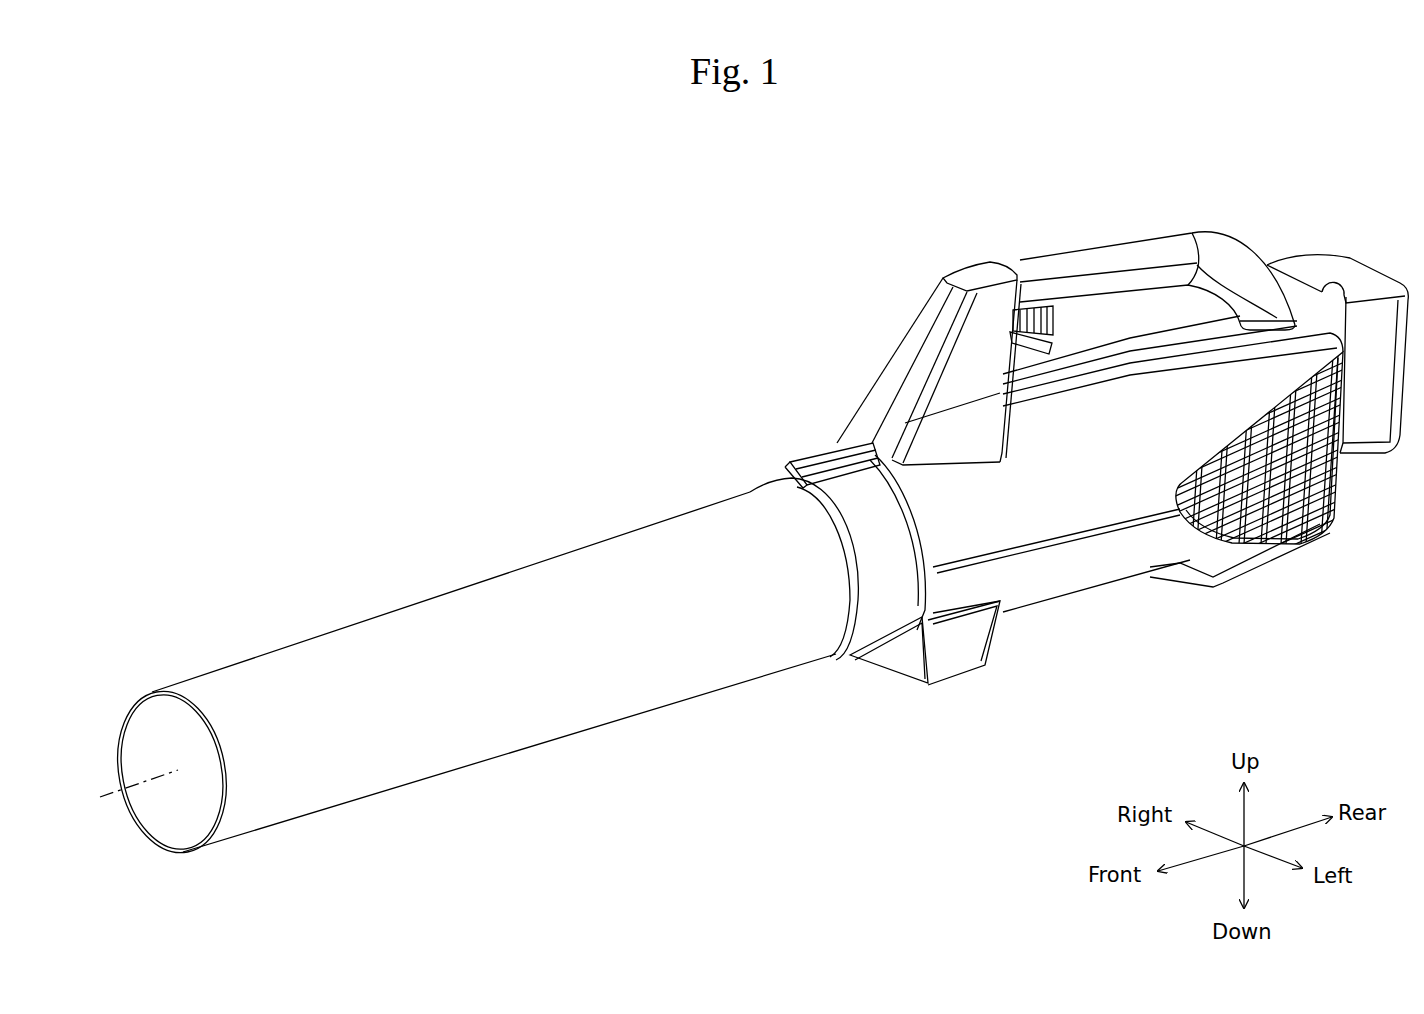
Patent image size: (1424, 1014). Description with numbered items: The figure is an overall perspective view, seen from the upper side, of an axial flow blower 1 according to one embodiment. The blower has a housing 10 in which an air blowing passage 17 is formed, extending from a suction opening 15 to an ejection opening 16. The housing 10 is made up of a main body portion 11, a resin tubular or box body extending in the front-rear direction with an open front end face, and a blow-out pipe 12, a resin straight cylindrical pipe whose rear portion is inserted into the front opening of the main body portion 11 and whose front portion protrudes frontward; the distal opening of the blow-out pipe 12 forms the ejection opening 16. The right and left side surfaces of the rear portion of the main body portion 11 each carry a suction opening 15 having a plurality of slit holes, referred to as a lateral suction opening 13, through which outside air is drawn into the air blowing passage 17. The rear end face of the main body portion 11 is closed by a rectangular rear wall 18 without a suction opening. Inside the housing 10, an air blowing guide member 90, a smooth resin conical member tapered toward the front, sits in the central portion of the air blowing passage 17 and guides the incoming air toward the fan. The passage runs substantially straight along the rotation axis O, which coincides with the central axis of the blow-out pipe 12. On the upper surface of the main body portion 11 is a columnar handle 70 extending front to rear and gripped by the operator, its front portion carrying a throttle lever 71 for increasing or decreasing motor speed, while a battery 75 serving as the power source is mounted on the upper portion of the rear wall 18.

The axial flow blower 1 is at (757, 357).
The housing 10 is at (1080, 598).
The main body portion 11 is at (1046, 473).
The blow-out pipe 12 is at (512, 585).
The lateral suction opening 13 is at (1277, 483).
The suction opening 15 is at (1248, 527).
The ejection opening 16 is at (223, 795).
The air blowing passage 17 is at (173, 742).
The rear wall 18 is at (1348, 490).
The handle 70 is at (1120, 256).
The throttle lever 71 is at (1057, 338).
The battery 75 is at (1343, 272).
The air blowing guide member 90 is at (1290, 531).
The rotation axis O is at (92, 797).